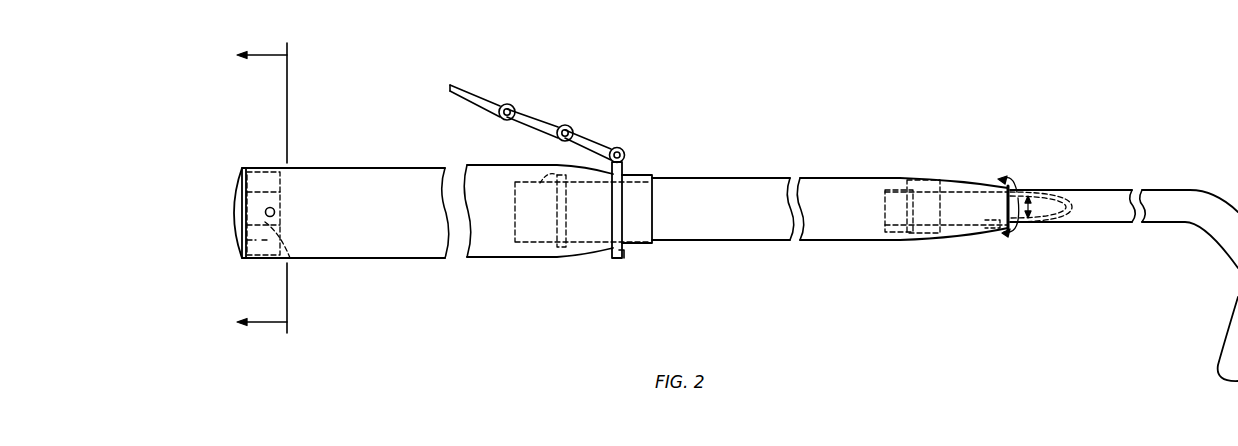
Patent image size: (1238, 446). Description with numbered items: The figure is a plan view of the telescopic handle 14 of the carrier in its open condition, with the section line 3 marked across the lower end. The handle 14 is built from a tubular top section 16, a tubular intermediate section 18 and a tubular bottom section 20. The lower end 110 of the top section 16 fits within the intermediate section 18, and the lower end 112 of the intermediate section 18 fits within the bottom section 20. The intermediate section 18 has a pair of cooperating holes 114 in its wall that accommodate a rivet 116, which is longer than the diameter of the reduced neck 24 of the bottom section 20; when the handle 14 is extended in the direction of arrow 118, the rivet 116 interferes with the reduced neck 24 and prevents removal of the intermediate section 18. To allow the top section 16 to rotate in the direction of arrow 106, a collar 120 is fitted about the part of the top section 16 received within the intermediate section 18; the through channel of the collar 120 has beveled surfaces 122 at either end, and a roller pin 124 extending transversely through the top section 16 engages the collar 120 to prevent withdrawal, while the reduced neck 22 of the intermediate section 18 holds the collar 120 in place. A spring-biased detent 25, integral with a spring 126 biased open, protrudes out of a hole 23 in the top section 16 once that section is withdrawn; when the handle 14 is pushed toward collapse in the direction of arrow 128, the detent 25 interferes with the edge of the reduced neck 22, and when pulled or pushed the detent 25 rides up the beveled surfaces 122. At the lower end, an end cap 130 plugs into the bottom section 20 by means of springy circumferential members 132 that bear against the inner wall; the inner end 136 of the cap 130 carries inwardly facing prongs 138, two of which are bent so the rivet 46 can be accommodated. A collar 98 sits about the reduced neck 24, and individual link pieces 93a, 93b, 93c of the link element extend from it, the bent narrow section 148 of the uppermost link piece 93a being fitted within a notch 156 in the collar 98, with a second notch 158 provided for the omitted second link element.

The section line 3- 3 is at (270, 189).
The telescopic handle 14 is at (331, 127).
The bottom section 20 is at (333, 167).
The end cap 130 is at (233, 196).
The springy circumferential members 132 is at (237, 205).
The rivet 46 is at (275, 211).
The inner end 136 is at (292, 224).
The inwardly facing prongs 138 is at (267, 230).
The link piece 93c is at (482, 97).
The link piece 93b is at (550, 120).
The link piece 93a is at (597, 140).
The bent narrow section 148 is at (621, 152).
The notch 156 is at (624, 162).
The cooperating holes 114 is at (540, 183).
The lower end 112 is at (517, 247).
The rivet 116 is at (563, 252).
The second notch 158 is at (621, 256).
The collar 98 is at (614, 260).
The reduced neck 24 is at (645, 246).
The arrow 118 is at (855, 148).
The intermediate section 18 is at (815, 178).
The beveled surfaces 122 is at (912, 182).
The collar 120 is at (920, 180).
The lower end 110 is at (887, 223).
The roller pin 124 is at (897, 233).
The arrow 106 is at (1016, 184).
The arrow 128 is at (1030, 147).
The spring 126 is at (1068, 188).
The top section 16 is at (1187, 185).
The reduced neck 22 is at (992, 227).
The hole 23 is at (1025, 222).
The spring-biased detent 25 is at (1022, 228).